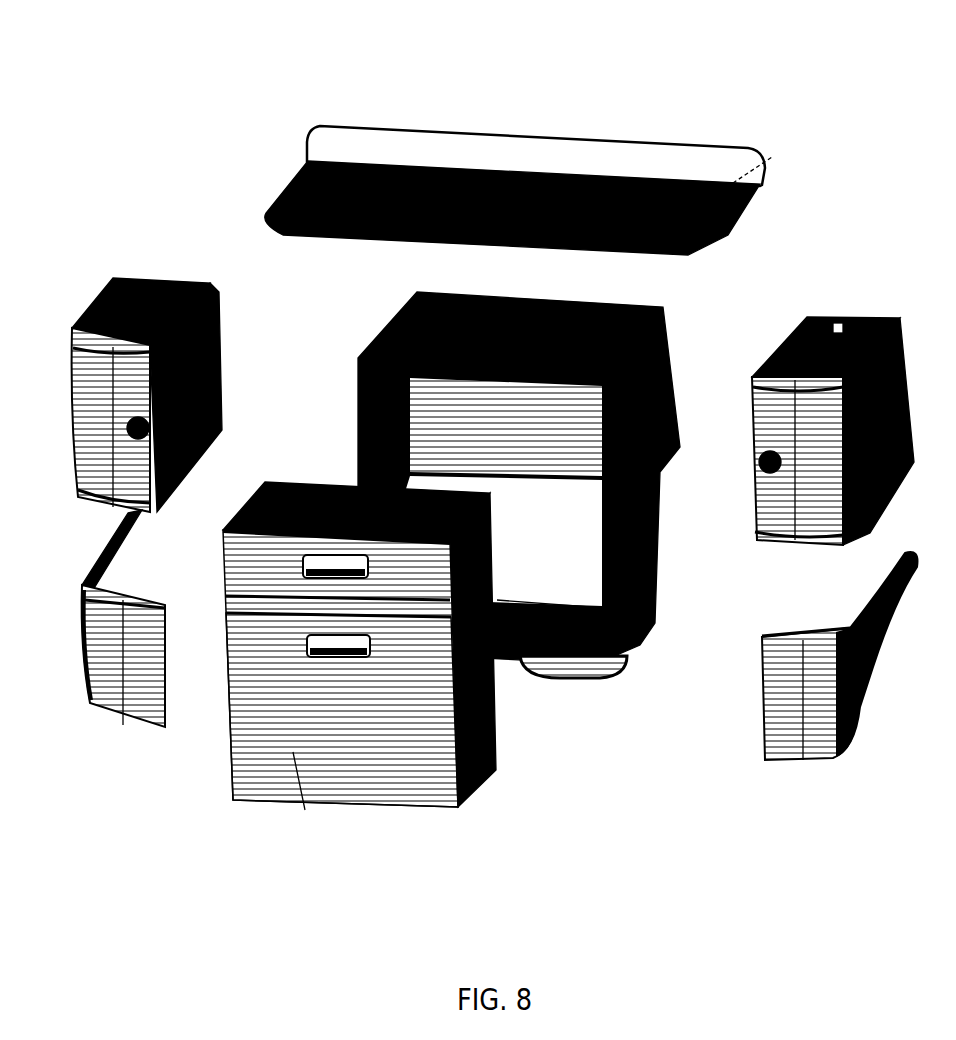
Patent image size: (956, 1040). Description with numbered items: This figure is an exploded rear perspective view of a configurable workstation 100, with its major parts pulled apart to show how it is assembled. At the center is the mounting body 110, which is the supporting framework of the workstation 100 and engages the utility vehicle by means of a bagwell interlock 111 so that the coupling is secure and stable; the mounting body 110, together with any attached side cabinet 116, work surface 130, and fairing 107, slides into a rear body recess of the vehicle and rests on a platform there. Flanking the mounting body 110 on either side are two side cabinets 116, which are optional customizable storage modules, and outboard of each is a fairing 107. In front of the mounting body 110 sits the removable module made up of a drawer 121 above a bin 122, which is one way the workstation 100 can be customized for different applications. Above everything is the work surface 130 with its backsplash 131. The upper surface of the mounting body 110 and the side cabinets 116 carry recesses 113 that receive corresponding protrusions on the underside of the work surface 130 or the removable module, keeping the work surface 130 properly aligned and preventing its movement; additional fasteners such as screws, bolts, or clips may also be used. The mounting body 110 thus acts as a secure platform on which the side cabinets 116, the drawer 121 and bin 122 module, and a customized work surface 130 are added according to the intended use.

The configurable workstation 100 is at (855, 92).
The fairing 107 is at (100, 708).
The mounting body 110 is at (657, 593).
The bagwell interlock 111 is at (558, 678).
The recess 113 is at (527, 313).
The side cabinet 116 is at (155, 282).
The drawer 121 is at (406, 568).
The bin 122 is at (332, 713).
The work surface 130 is at (515, 210).
The backsplash 131 is at (527, 163).